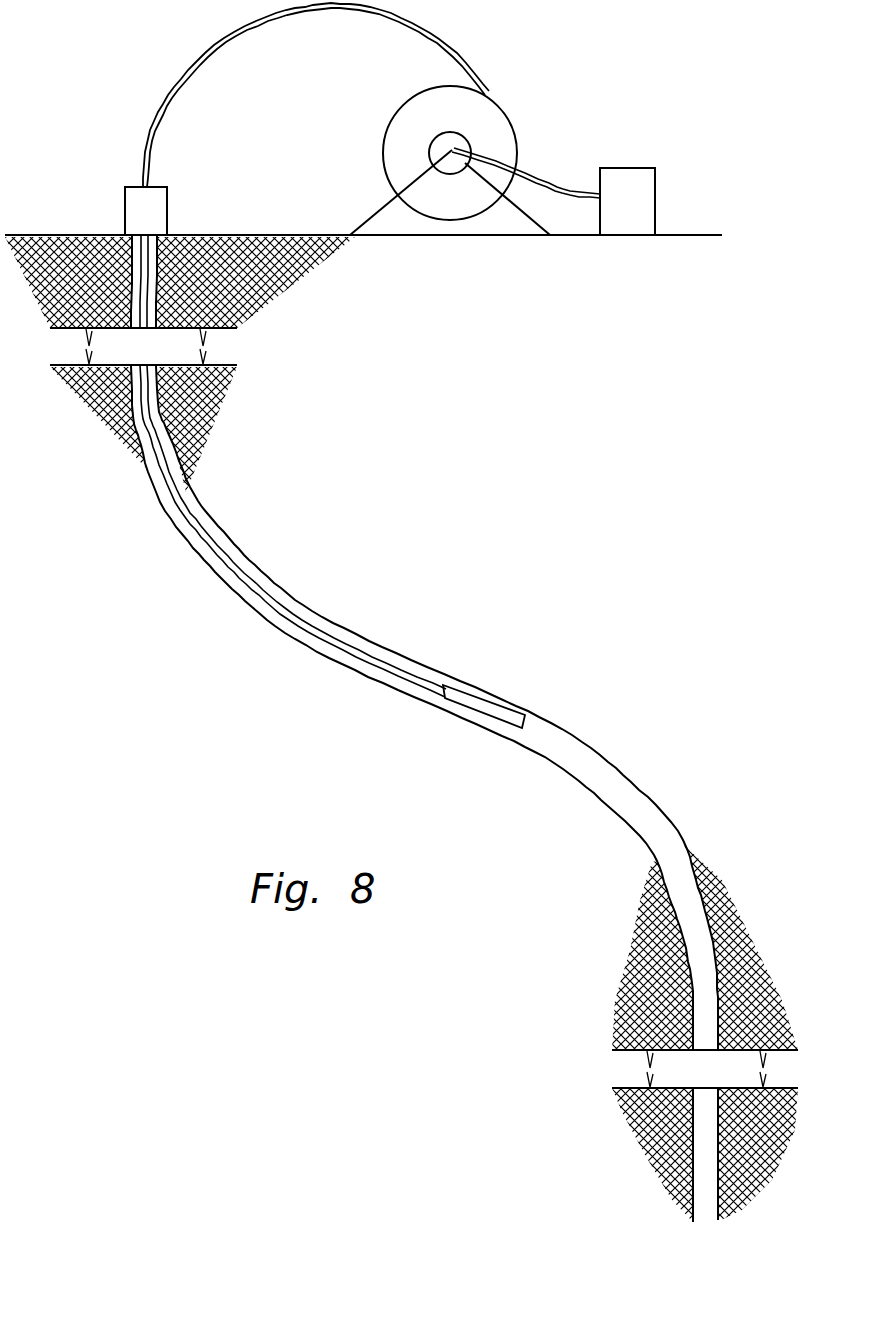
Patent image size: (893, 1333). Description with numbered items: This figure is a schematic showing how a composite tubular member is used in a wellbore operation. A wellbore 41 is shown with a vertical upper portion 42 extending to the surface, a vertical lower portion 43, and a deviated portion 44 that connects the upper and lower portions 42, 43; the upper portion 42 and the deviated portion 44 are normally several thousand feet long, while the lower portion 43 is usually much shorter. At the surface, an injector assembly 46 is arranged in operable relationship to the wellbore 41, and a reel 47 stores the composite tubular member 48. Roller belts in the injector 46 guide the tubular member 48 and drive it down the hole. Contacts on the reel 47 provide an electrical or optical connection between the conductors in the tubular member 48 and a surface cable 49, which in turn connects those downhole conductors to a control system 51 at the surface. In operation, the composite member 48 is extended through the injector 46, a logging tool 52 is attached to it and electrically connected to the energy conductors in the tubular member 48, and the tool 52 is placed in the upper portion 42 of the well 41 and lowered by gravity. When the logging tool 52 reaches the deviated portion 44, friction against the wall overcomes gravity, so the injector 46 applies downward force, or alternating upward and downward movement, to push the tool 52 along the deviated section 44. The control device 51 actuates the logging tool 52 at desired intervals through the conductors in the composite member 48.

The wellbore 41 is at (100, 234).
The vertical upper portion 42 is at (152, 315).
The vertical lower portion 43 is at (693, 1157).
The deviated portion 44 is at (265, 622).
The injector assembly 46 is at (162, 200).
The reel 47 is at (493, 120).
The composite tubular member 48 is at (190, 80).
The surface cable 49 is at (548, 193).
The control system 51 is at (637, 182).
The logging tool 52 is at (482, 708).